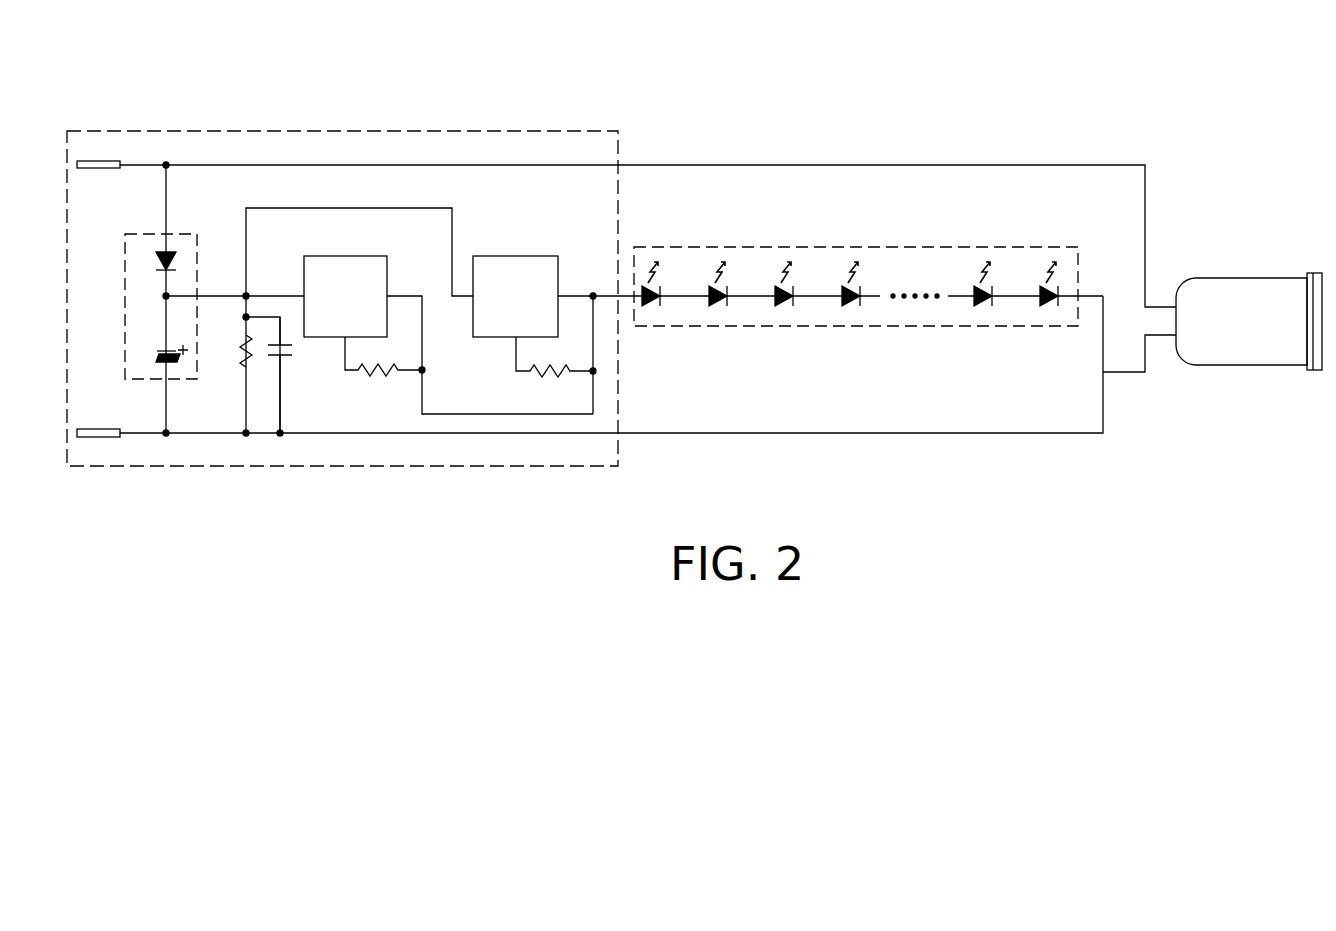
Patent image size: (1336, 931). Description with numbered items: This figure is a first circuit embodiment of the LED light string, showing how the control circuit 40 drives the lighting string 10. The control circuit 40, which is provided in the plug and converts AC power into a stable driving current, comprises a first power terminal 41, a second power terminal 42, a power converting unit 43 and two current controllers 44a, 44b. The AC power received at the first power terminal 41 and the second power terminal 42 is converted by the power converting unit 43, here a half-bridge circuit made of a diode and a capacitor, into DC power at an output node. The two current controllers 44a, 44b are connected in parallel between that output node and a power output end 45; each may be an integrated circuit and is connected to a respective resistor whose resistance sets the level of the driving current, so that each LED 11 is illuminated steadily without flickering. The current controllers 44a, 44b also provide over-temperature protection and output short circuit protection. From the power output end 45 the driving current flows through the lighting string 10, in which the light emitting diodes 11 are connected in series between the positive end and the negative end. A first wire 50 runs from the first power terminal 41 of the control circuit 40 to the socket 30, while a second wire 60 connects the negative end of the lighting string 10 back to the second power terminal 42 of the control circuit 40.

The lighting string 10 is at (868, 256).
The light emitting diode 11 is at (843, 296).
The socket 30 is at (1240, 278).
The control circuit 40 is at (305, 131).
The first power terminal 41 is at (97, 161).
The second power terminal 42 is at (97, 437).
The power converting unit 43 is at (150, 234).
The current controller 44a is at (340, 256).
The current controller 44b is at (512, 256).
The power output end 45 is at (593, 296).
The first wire 50 is at (814, 165).
The second wire 60 is at (878, 433).